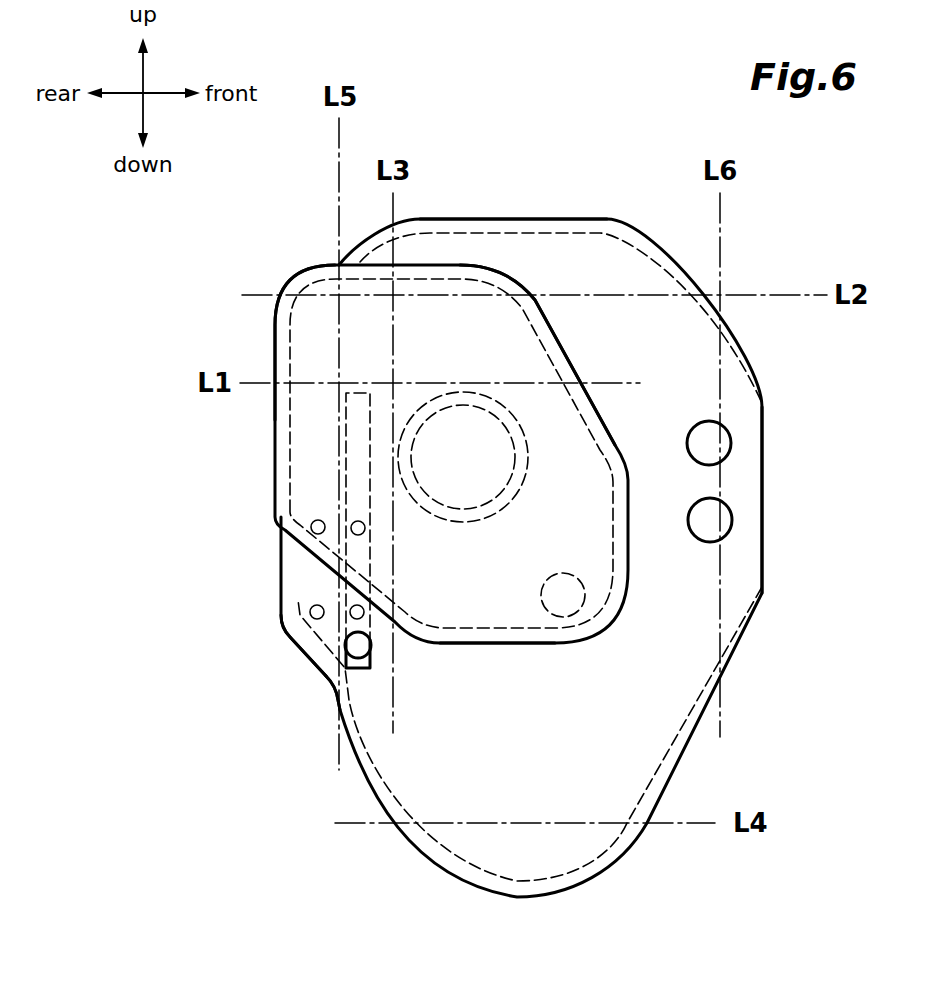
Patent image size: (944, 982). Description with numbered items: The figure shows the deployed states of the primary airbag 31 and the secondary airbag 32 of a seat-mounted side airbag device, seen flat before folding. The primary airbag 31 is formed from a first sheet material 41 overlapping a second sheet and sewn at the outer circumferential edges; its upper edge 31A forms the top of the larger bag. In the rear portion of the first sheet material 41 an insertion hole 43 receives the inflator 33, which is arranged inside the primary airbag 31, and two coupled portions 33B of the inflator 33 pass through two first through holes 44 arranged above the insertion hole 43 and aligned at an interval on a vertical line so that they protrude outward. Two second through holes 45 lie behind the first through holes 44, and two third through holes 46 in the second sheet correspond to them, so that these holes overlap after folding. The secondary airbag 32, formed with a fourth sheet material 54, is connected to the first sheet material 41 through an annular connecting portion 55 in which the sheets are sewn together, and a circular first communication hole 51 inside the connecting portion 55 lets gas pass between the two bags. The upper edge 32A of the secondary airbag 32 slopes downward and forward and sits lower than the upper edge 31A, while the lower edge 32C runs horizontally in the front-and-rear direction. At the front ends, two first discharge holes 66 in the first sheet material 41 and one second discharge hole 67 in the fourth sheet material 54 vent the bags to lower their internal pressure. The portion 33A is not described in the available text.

The primary airbag 31 is at (606, 221).
The upper edge of the primary airbag 31A is at (483, 220).
The secondary airbag 32 is at (296, 284).
The upper edge of the secondary airbag 32A is at (555, 338).
The lower edge of the secondary airbag 32C is at (490, 645).
The inflator 33 is at (365, 684).
The bracket lower portion 33A is at (347, 687).
The coupled portions of the inflator 33B is at (355, 611).
The first sheet material 41 is at (745, 572).
The insertion hole 43 is at (370, 668).
The first through holes 44 is at (362, 535).
The second through holes 45 is at (197, 569).
The third through holes 46 is at (311, 527).
The first communication hole 51 is at (496, 498).
The fourth sheet material 54 is at (303, 357).
The connecting portion 55 is at (481, 518).
The first discharge holes 66 is at (700, 453).
The second discharge hole 67 is at (585, 588).